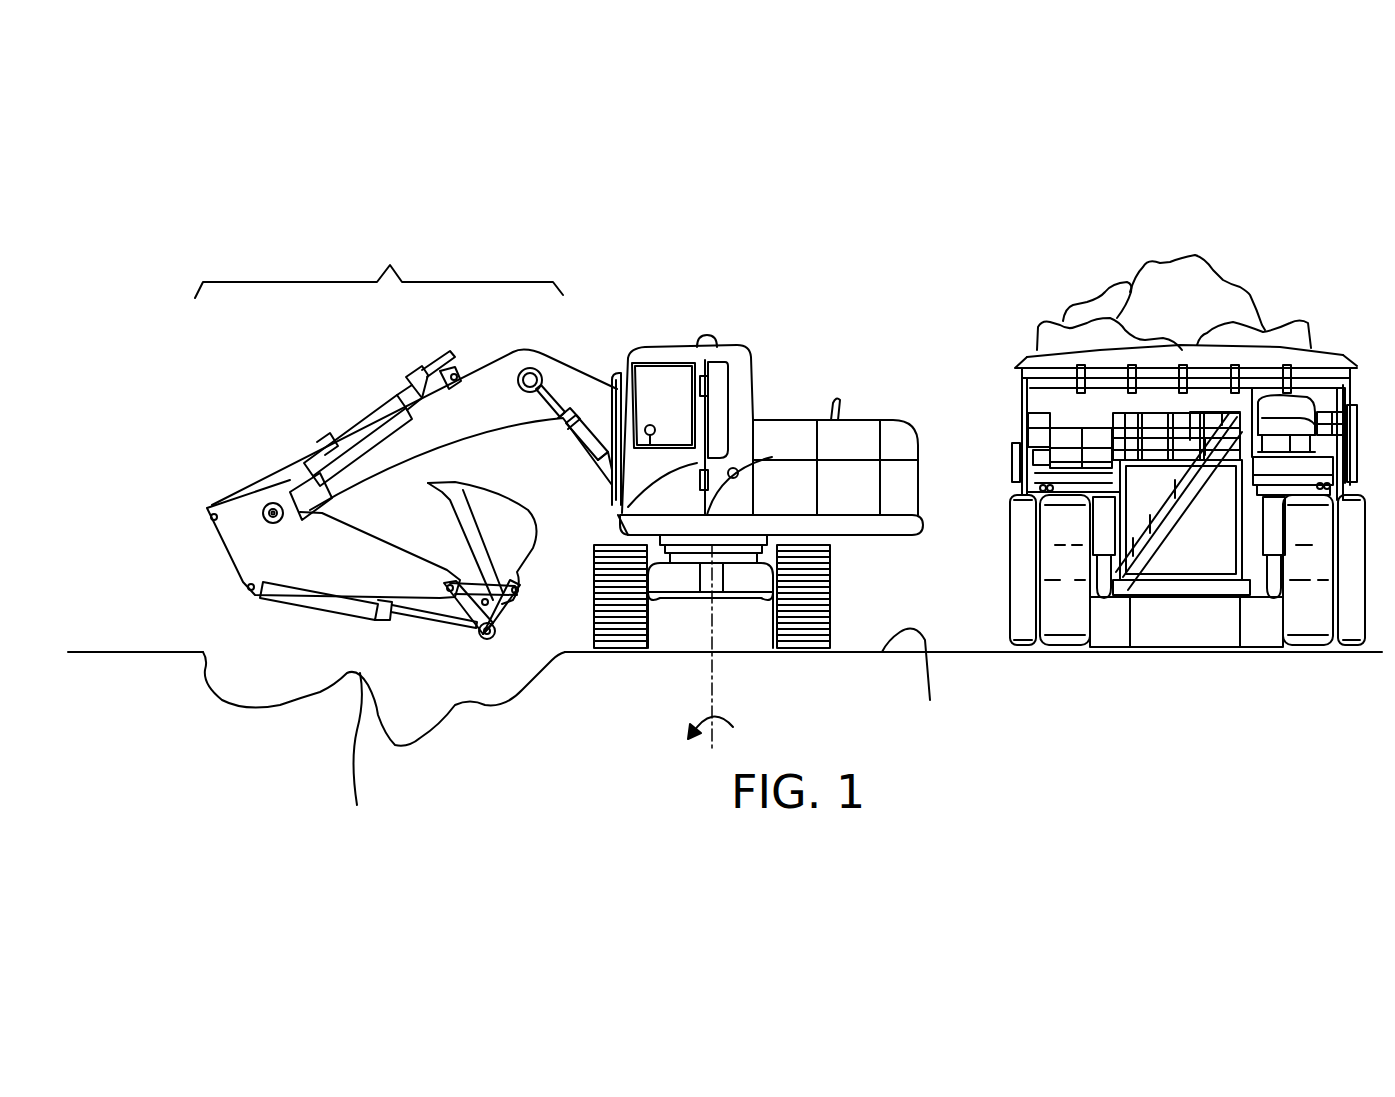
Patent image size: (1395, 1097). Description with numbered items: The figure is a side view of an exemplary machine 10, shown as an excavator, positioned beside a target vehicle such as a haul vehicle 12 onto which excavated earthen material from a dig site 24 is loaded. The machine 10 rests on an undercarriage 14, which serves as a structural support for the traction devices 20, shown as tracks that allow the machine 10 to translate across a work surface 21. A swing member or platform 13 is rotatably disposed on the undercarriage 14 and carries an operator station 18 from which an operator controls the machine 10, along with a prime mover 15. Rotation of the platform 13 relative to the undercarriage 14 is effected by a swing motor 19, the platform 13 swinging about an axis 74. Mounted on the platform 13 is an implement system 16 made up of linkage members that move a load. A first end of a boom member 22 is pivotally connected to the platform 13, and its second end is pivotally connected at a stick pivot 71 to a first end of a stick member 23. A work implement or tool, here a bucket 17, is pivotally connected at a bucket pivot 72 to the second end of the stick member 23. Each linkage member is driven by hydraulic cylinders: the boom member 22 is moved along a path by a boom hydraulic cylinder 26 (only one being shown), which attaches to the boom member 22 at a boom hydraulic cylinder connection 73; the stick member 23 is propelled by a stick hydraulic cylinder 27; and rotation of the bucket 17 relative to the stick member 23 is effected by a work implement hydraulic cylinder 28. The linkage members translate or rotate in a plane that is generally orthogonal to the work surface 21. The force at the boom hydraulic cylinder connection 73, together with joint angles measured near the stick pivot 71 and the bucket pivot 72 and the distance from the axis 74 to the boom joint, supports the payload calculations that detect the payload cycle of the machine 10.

The machine 10 is at (822, 300).
The haul vehicle 12 is at (1240, 252).
The platform 13 is at (905, 525).
The undercarriage 14 is at (752, 575).
The prime mover 15 is at (868, 449).
The implement system 16 is at (390, 263).
The bucket 17 is at (517, 542).
The operator station 18 is at (660, 345).
The swing motor 19 is at (764, 554).
The traction devices 20 is at (815, 606).
The work surface 21 is at (725, 679).
The boom member 22 is at (506, 418).
The stick member 23 is at (338, 559).
The dig site 24 is at (384, 744).
The boom hydraulic cylinder 26 is at (588, 455).
The stick hydraulic cylinder 27 is at (372, 420).
The work implement hydraulic cylinder 28 is at (318, 615).
The stick pivot 71 is at (255, 500).
The bucket pivot 72 is at (500, 638).
The boom hydraulic cylinder connection 73 is at (548, 367).
The axis 74 is at (707, 686).